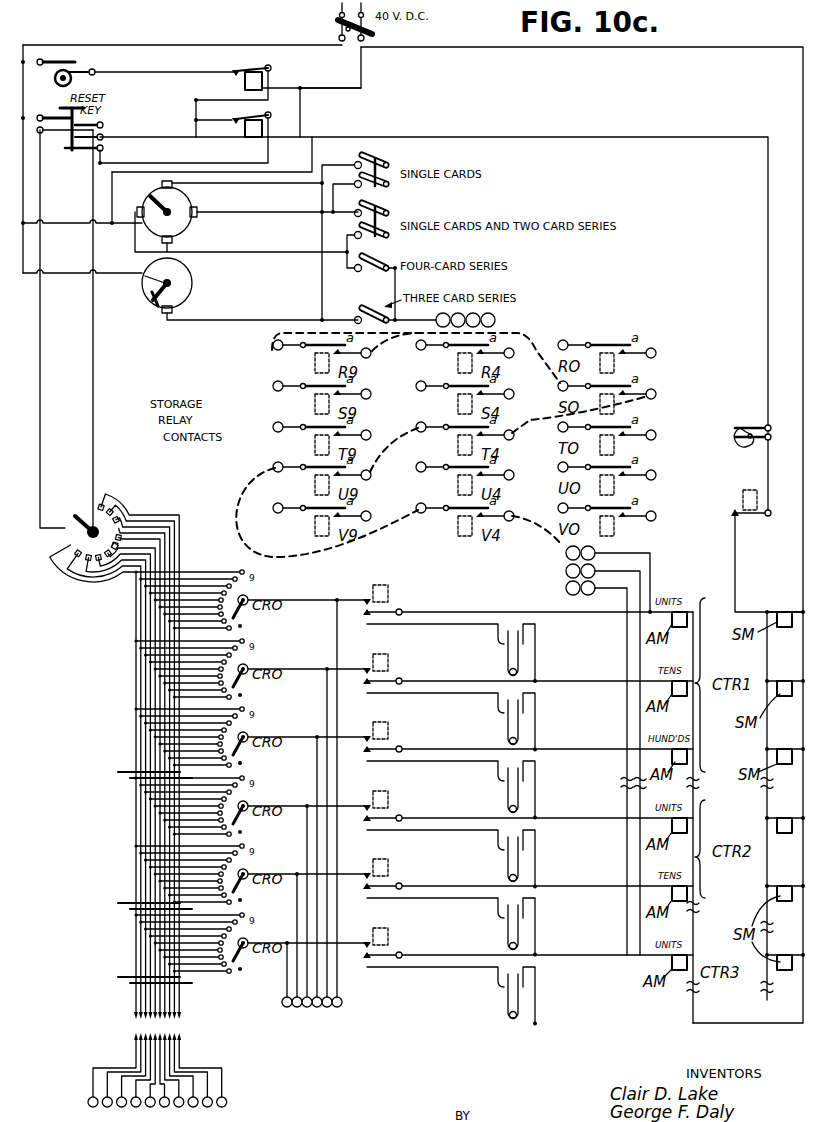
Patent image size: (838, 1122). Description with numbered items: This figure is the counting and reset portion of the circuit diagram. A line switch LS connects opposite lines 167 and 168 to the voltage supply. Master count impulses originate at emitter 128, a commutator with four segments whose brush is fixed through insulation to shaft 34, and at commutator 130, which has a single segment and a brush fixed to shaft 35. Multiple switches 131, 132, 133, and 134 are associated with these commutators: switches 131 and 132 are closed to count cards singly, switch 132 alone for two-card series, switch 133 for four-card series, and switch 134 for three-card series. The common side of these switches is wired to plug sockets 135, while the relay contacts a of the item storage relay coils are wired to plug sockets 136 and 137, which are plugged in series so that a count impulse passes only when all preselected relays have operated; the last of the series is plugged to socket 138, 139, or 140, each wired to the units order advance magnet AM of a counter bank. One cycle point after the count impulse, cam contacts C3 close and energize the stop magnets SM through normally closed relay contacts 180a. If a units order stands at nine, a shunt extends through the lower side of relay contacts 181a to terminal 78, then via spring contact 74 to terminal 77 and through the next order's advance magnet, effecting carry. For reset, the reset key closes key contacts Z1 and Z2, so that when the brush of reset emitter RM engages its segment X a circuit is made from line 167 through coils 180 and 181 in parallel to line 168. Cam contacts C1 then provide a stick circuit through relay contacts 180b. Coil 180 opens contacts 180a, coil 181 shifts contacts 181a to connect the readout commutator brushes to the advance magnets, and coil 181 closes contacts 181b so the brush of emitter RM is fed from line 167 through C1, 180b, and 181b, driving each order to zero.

The line 167 is at (178, 44).
The line 168 is at (487, 44).
The coil 180 is at (262, 78).
The relay contacts 180a is at (733, 516).
The relay contacts 180b is at (235, 70).
The coil 181 is at (262, 126).
The relay contacts 181a is at (366, 613).
The relay contacts 181b is at (235, 118).
The master count impulse emitter 128 is at (192, 198).
The commutator 130 is at (192, 278).
The switch 131 is at (375, 162).
The switch 132 is at (372, 208).
The switch 133 is at (375, 262).
The switch 134 is at (372, 306).
The plug sockets 135 is at (495, 321).
The plug socket 136 is at (273, 349).
The plug socket 137 is at (370, 430).
The socket 138 is at (565, 553).
The socket 139 is at (565, 571).
The socket 140 is at (565, 590).
The shaft 34 is at (60, 86).
The shaft 35 is at (172, 287).
The looped spring 74 is at (507, 657).
The terminal 77 is at (536, 634).
The terminal 78 is at (496, 642).
The cam contacts C1 is at (88, 68).
The cam contacts C3 is at (736, 432).
The key contacts Z1 is at (100, 128).
The key contacts Z2 is at (85, 152).
The line switch LS is at (336, 30).
The reset emitter RM is at (85, 524).